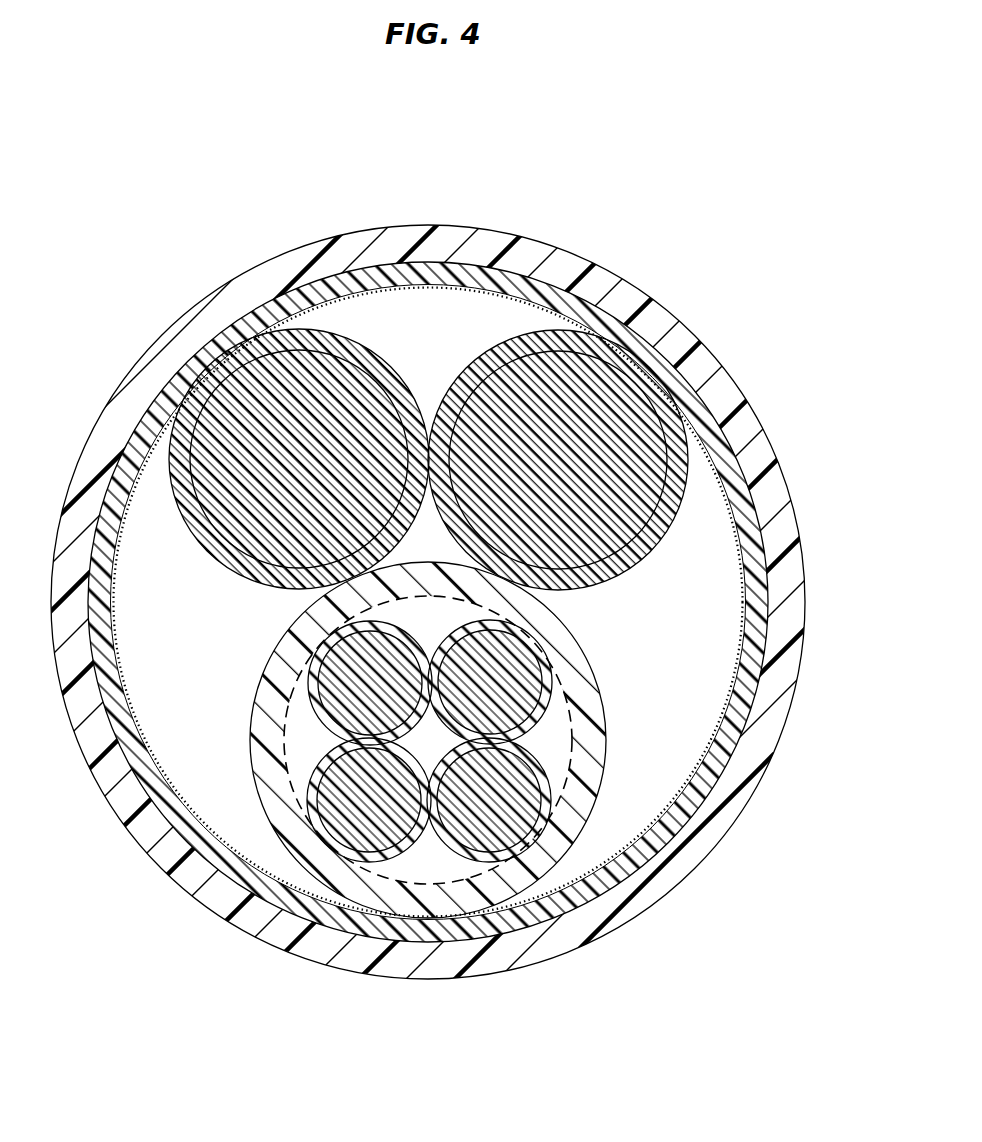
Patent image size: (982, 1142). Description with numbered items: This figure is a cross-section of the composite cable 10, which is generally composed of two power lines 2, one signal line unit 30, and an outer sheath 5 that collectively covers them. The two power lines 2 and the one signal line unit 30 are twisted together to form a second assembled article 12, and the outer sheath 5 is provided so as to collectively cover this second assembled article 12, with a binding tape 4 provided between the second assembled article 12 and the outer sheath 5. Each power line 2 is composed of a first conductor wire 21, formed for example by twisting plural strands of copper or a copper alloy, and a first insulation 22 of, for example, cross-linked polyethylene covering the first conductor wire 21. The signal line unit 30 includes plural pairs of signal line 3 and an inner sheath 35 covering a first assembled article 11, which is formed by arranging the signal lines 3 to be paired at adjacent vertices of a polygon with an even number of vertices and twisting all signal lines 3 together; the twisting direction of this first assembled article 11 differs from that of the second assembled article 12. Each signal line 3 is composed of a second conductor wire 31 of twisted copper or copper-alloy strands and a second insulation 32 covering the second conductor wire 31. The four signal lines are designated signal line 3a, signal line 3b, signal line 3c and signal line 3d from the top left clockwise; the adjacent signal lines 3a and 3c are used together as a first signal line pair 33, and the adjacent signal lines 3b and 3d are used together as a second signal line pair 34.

The composite cable 10 is at (435, 628).
The power line 2 is at (458, 420).
The first conductor wire 21 is at (228, 410).
The first insulation 22 is at (240, 360).
The signal line 3 is at (442, 781).
The second conductor wire 31 is at (333, 665).
The second insulation 32 is at (313, 692).
The first signal line pair 33 is at (359, 696).
The signal line 3a is at (317, 683).
The signal line 3b is at (440, 727).
The signal line 3c is at (555, 818).
The signal line 3d is at (422, 848).
The signal line unit 30 is at (456, 798).
The second signal line pair 34 is at (727, 903).
The inner sheath 35 is at (385, 902).
The first assembled article 11 is at (514, 815).
The second assembled article 12 is at (744, 551).
The binding tape 4 is at (750, 484).
The outer sheath 5 is at (773, 493).